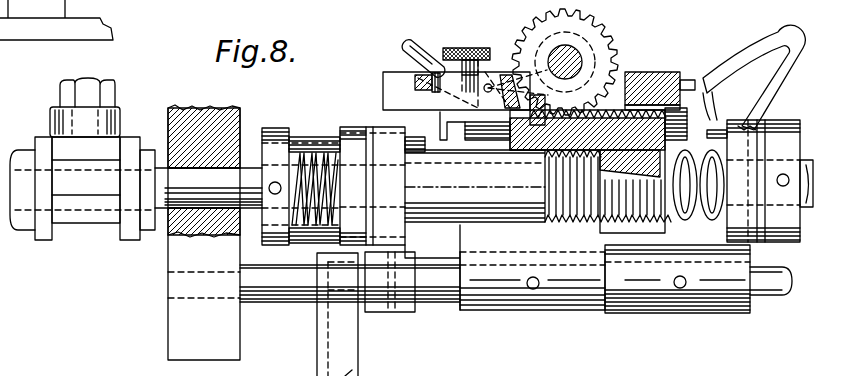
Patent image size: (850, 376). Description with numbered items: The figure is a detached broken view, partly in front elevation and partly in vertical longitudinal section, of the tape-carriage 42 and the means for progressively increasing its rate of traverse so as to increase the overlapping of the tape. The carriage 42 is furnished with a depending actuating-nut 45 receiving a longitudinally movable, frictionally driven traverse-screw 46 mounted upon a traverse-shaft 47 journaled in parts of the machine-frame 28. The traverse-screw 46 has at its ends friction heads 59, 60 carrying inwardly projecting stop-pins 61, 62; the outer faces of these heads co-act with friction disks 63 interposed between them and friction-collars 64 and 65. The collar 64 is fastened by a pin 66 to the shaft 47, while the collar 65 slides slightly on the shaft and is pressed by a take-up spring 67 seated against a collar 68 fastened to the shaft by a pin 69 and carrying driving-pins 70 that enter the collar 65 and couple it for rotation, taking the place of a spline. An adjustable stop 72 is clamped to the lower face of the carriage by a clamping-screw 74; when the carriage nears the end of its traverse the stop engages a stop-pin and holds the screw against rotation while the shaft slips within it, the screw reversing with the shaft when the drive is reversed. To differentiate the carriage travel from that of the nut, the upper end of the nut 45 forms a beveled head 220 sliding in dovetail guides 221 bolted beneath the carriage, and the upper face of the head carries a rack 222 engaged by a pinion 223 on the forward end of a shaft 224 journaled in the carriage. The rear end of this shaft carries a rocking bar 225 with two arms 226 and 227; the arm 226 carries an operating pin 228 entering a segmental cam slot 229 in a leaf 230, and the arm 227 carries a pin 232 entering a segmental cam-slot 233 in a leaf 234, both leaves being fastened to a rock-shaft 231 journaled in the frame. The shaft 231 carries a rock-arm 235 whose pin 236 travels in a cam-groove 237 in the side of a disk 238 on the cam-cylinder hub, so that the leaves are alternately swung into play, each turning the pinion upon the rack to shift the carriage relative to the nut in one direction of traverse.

The machine-frame 28 is at (178, 256).
The tape-carriage 42 is at (392, 78).
The actuating-nut 45 is at (605, 229).
The traverse-screw 46 is at (462, 190).
The traverse-shaft 47 is at (168, 180).
The friction head 59 is at (738, 197).
The friction head 60 is at (395, 183).
The stop-pin 61 is at (716, 128).
The stop-pin 62 is at (410, 137).
The friction disk 63 is at (370, 212).
The friction-collar 64 is at (786, 243).
The friction-collar 65 is at (350, 130).
The pin 66 is at (783, 174).
The take-up spring 67 is at (312, 155).
The collar 68 is at (272, 128).
The pin 69 is at (268, 188).
The driving-pins 70 is at (295, 137).
The adjustable stop 72 is at (445, 143).
The clamping-screw 74 is at (470, 48).
The head 220 is at (547, 143).
The dovetail guides 221 is at (487, 139).
The rack 222 is at (528, 140).
The pinion 223 is at (610, 65).
The shaft 224 is at (578, 48).
The rocking bar 225 is at (540, 20).
The arm 226 is at (628, 75).
The arm 227 is at (487, 82).
The operating pin 228 is at (688, 80).
The segmental cam slot 229 is at (760, 62).
The leaf 230 is at (765, 85).
The rock-shaft 231 is at (455, 290).
The pin 232 is at (478, 58).
The segmental cam-slot 233 is at (420, 45).
The leaf 234 is at (520, 290).
The rock-arm 235 is at (380, 298).
The pin 236 is at (335, 292).
The cam-groove 237 is at (328, 335).
The disk 238 is at (350, 375).